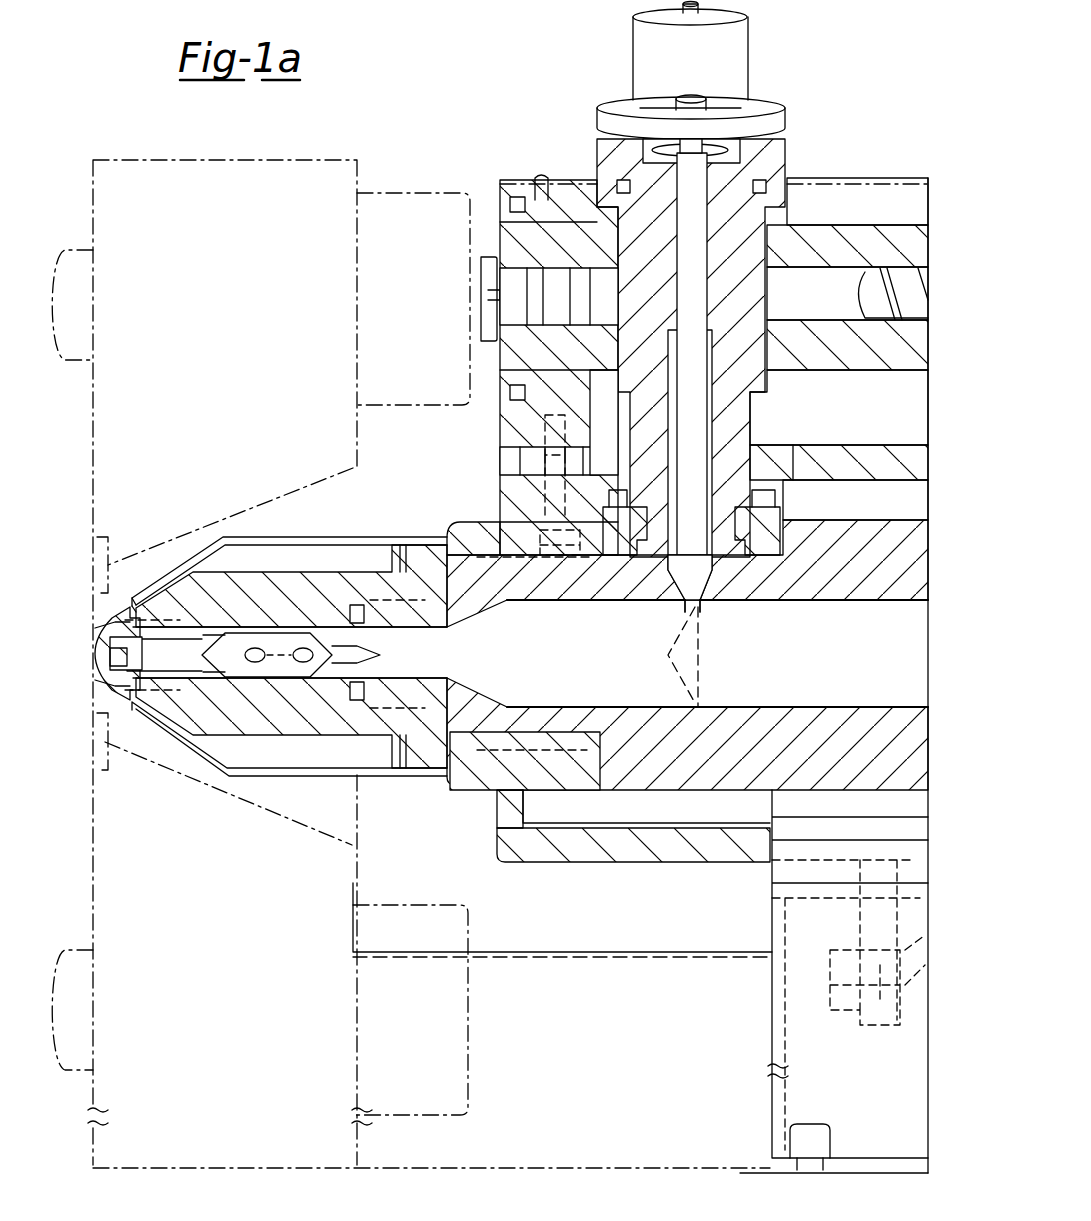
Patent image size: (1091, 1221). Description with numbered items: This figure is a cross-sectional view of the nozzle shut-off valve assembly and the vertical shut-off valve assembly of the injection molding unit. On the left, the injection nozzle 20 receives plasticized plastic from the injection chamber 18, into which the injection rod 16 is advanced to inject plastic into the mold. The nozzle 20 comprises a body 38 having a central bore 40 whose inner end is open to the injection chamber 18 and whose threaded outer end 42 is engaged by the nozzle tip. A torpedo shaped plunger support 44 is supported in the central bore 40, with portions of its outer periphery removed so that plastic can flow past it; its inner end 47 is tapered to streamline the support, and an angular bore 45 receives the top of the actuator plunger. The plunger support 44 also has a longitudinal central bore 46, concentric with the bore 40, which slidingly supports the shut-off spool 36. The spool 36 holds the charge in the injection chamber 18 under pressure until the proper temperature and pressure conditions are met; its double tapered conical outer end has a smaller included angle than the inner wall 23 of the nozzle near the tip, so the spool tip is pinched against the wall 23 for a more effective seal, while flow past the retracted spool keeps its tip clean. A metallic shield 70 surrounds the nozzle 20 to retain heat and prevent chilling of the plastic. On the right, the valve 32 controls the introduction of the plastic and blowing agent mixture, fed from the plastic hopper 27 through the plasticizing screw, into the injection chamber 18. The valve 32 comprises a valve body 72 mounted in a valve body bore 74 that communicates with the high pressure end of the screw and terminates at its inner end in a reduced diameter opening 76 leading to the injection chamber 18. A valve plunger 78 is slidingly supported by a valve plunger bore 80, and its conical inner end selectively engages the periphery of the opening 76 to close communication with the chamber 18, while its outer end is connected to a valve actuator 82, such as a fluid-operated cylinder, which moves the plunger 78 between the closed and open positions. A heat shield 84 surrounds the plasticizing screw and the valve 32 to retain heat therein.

The injection rod 16 is at (792, 681).
The injection chamber 18 is at (600, 681).
The injection nozzle 20 is at (382, 482).
The inner wall 23 is at (117, 658).
The plastic hopper 27 is at (97, 632).
The valve 32 is at (748, 62).
The shut-off spool 36 is at (128, 675).
The body 38 is at (323, 572).
The central bore 40 is at (270, 622).
The threaded outer end 42 is at (130, 607).
The plunger support 44 is at (332, 633).
The angular bore 45 is at (320, 668).
The central bore 46 is at (217, 672).
The inner end 47 is at (340, 655).
The metallic shield 70 is at (225, 558).
The valve body 72 is at (755, 317).
The valve body bore 74 is at (632, 217).
The reduced diameter opening 76 is at (687, 603).
The valve plunger 78 is at (736, 243).
The valve plunger bore 80 is at (663, 358).
The valve actuator 82 is at (640, 50).
The heat shield 84 is at (843, 178).